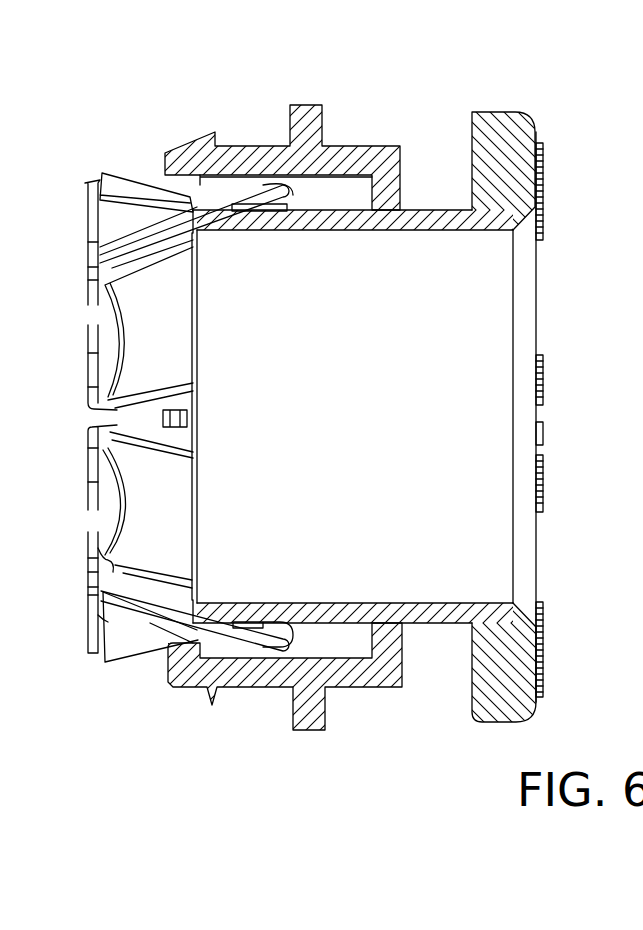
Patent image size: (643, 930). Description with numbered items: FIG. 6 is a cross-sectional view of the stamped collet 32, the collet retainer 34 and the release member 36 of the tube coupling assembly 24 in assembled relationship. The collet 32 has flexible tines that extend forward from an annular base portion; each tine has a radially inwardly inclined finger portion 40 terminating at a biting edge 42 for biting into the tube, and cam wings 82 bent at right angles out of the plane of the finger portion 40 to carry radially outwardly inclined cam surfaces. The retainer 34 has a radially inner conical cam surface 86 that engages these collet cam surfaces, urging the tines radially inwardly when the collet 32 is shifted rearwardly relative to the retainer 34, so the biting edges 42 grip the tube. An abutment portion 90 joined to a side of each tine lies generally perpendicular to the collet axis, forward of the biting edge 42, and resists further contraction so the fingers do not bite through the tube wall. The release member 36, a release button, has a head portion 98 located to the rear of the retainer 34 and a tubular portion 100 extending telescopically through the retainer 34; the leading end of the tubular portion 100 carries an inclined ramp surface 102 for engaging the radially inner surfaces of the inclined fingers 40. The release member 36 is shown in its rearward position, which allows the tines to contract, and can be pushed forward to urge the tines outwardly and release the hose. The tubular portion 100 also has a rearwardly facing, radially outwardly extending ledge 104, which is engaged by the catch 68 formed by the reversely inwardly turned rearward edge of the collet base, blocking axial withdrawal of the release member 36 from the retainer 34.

The tube coupling assembly 24 is at (467, 88).
The head portion 98 is at (503, 112).
The release member 36 is at (542, 670).
The tubular portion 100 is at (430, 626).
The cam surface 86 is at (168, 184).
The ledge 104 is at (240, 210).
The collet retainer 34 is at (171, 690).
The inclined ramp surface 102 is at (210, 630).
The catch 68 is at (262, 624).
The stamped collet 32 is at (85, 183).
The biting edge 42 is at (118, 318).
The cam wings 82 is at (153, 427).
The inclined finger portion 40 is at (138, 523).
The abutment portion 90 is at (88, 548).